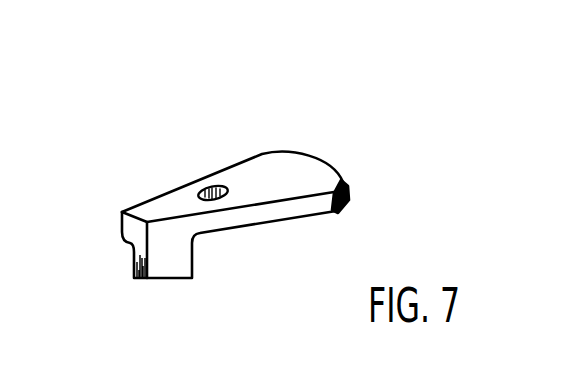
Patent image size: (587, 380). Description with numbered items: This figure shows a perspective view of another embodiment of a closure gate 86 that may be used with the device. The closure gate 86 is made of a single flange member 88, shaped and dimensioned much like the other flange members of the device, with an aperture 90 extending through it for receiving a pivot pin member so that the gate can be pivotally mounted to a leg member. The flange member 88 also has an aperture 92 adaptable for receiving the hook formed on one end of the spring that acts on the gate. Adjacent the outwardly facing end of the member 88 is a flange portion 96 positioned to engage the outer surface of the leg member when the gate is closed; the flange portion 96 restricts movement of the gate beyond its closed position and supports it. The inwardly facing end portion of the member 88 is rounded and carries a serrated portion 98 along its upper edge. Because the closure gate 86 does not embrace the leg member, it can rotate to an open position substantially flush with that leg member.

The closure gate 86 is at (255, 196).
The flange member 88 is at (153, 212).
The aperture 90 is at (220, 198).
The aperture 92 is at (280, 160).
The flange portion 96 is at (176, 262).
The serrated portion 98 is at (347, 201).